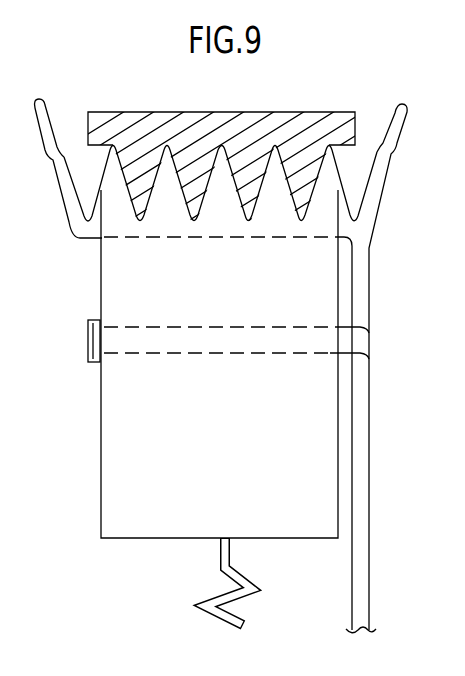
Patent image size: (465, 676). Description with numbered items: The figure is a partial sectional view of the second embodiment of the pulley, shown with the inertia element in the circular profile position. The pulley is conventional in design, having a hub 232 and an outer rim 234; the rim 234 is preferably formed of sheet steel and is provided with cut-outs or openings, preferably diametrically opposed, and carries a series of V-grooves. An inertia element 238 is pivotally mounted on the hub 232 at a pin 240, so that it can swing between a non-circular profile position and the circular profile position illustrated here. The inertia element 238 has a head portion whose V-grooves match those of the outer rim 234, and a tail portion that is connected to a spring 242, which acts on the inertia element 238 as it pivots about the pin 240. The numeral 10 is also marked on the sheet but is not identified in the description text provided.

The sealing element 10 is at (227, 112).
The hub 232 is at (370, 452).
The rim 234 is at (64, 207).
The inertia element 238 is at (113, 492).
The pin 240 is at (93, 347).
The spring 242 is at (210, 598).